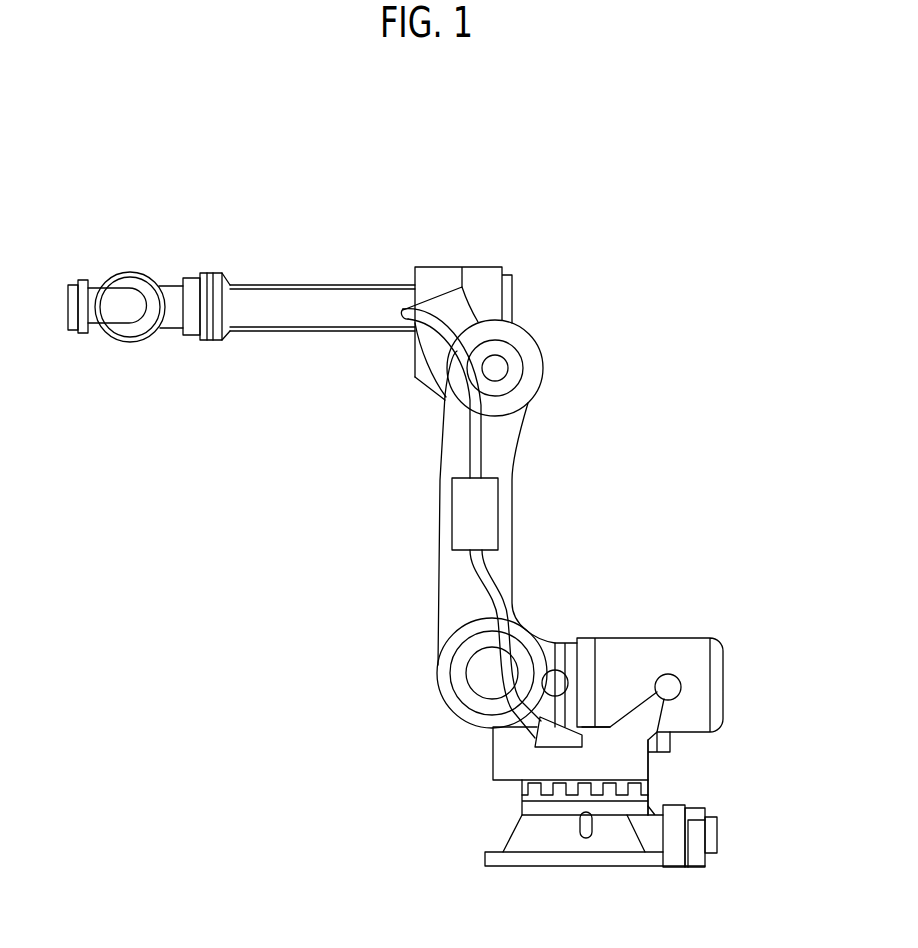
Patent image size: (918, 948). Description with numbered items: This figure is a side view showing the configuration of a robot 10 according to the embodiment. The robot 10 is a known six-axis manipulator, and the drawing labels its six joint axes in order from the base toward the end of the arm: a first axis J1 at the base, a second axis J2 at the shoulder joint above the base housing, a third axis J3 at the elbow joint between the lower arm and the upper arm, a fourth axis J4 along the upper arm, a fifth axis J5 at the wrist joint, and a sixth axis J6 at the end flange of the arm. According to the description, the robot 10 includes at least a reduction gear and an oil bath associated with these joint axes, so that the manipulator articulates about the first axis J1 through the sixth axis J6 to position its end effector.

The robot 10 is at (670, 301).
The first axis J1 is at (657, 791).
The second axis J2 is at (522, 645).
The third axis J3 is at (553, 367).
The fourth axis J4 is at (221, 262).
The fifth axis J5 is at (136, 261).
The sixth axis J6 is at (71, 340).